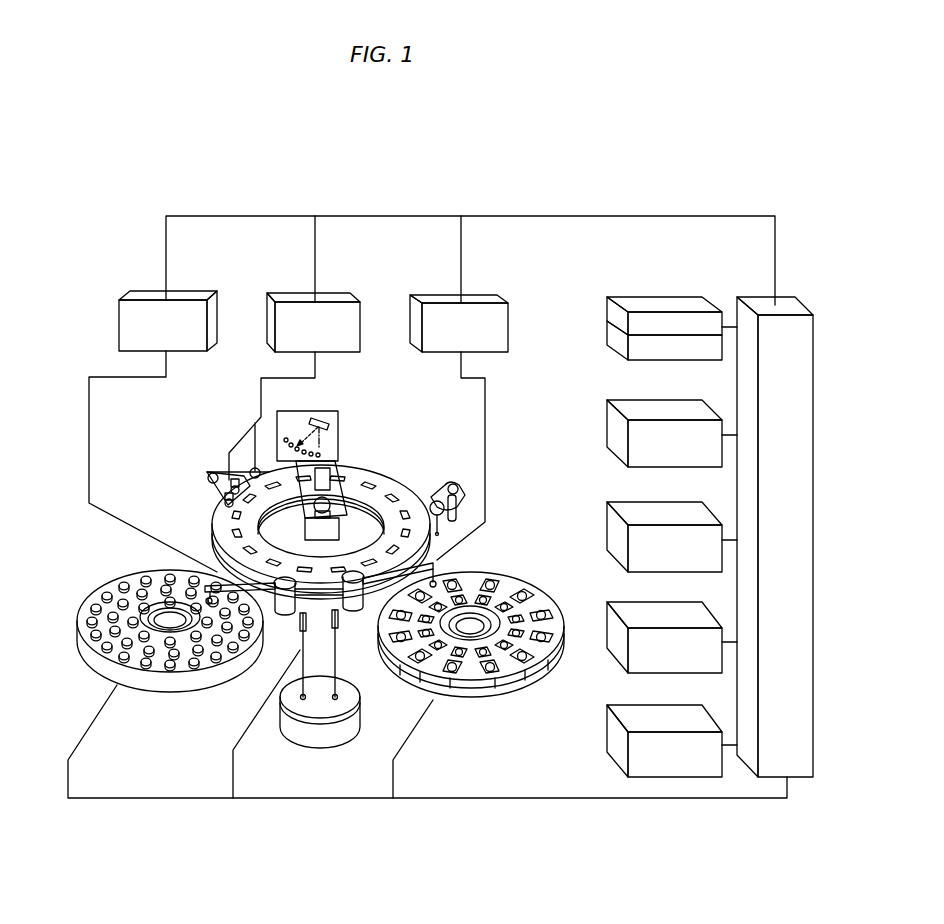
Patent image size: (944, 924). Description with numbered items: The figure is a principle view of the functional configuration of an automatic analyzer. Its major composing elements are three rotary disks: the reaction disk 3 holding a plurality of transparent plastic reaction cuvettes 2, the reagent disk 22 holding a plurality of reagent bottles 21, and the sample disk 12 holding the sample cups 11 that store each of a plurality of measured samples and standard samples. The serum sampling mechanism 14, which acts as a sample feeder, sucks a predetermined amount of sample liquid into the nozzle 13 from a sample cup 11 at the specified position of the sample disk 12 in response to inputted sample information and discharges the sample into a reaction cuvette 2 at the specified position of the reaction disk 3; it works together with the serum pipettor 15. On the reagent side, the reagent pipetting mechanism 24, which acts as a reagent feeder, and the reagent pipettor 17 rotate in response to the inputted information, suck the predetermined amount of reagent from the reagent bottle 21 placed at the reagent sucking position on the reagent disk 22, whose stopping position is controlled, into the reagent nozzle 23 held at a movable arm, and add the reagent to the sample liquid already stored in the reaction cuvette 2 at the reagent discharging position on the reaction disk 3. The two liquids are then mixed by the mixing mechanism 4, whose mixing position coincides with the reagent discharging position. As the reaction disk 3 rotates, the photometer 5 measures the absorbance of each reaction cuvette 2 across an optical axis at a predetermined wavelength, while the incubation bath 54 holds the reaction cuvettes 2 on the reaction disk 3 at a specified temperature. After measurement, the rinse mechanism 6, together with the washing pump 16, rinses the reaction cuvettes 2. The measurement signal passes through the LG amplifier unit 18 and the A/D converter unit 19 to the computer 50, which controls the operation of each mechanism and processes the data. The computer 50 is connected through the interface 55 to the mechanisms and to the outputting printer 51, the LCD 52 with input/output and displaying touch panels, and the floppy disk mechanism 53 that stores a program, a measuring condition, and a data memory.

The reaction cuvette 2 is at (350, 470).
The reaction disk 3 is at (414, 484).
The mixing mechanism 4 is at (462, 498).
The photometer 5 is at (332, 434).
The rinse mechanism 6 is at (206, 483).
The sample cup 11 is at (206, 664).
The sample disk 12 is at (150, 683).
The nozzle 13 is at (170, 567).
The serum sampling mechanism 14 is at (284, 618).
The serum pipettor 15 is at (190, 297).
The washing pump 16 is at (340, 297).
The reagent pipettor 17 is at (490, 297).
The LG amplifier unit 18 is at (636, 326).
The A/D converter unit 19 is at (636, 348).
The reagent bottle 21 is at (507, 582).
The reagent disk 22 is at (490, 667).
The reagent nozzle 23 is at (433, 566).
The reagent pipetting mechanism 24 is at (352, 612).
The computer 50 is at (621, 440).
The outputting printer 51 is at (626, 642).
The LCD 52 is at (621, 537).
The floppy disk mechanism 53 is at (621, 747).
The incubation bath 54 is at (298, 734).
The interface 55 is at (793, 303).